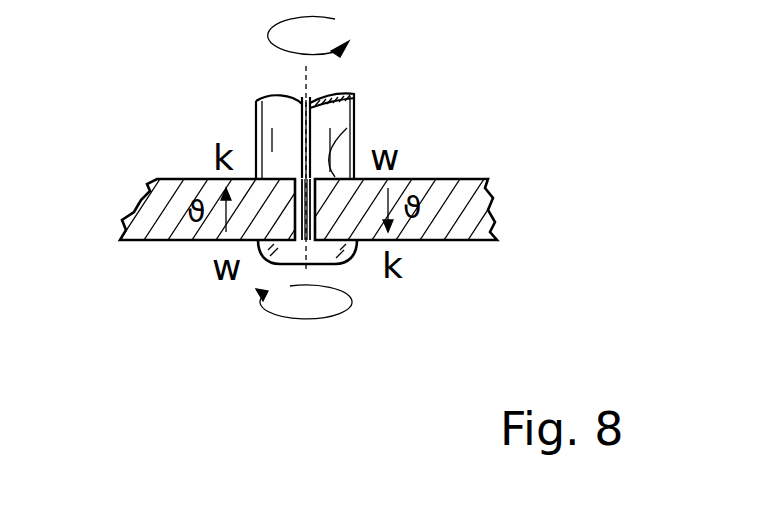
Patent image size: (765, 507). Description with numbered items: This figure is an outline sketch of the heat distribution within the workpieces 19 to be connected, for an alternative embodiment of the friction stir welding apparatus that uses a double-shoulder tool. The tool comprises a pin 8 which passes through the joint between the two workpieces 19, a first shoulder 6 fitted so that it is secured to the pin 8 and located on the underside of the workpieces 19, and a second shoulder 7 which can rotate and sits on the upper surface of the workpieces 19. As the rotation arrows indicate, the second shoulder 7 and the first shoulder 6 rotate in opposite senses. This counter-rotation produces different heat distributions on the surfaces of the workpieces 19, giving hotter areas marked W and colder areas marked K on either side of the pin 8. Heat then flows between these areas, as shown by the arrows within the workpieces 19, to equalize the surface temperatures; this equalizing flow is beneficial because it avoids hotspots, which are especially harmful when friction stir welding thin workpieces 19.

The second shoulder 7 is at (353, 122).
The workpieces 19 is at (148, 207).
The pin 8 is at (253, 243).
The first shoulder 6 is at (350, 257).